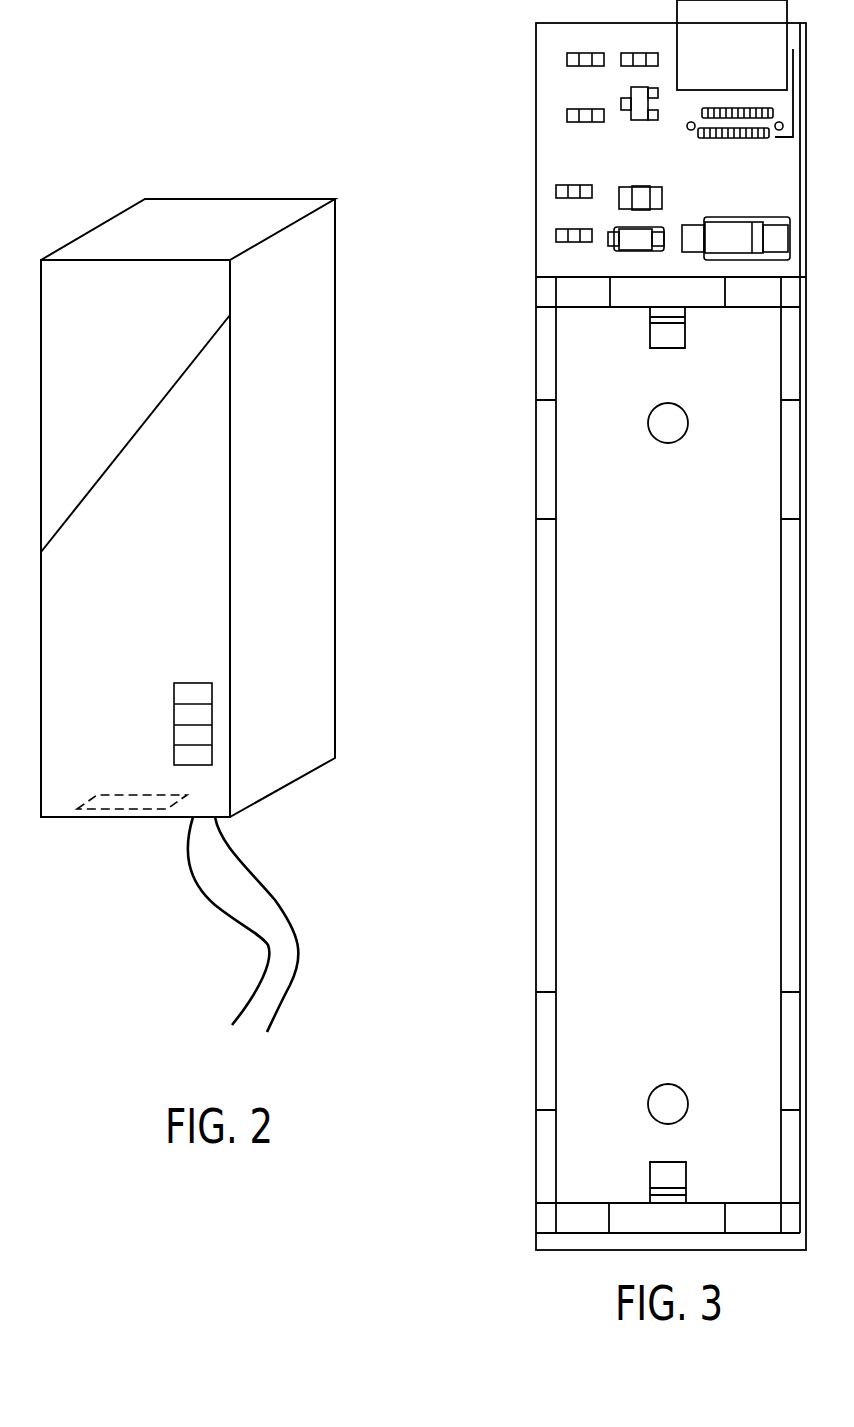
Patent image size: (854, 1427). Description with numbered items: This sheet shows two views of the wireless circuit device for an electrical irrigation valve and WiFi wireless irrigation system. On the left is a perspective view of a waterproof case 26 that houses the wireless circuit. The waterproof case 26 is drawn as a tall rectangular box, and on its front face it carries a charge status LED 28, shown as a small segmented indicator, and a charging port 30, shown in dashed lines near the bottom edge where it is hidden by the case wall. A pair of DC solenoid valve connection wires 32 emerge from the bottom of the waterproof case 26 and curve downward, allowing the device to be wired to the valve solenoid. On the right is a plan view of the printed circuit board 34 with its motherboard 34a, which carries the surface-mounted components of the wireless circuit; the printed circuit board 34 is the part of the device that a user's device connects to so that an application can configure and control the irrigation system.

In FIG. 2, the waterproof case 26 is at (90, 224).
In FIG. 2, the charge status LED 28 is at (174, 717).
In FIG. 2, the charging port 30 is at (111, 817).
In FIG. 2, the DC solenoid valve connection wires 32 is at (287, 1000).
In FIG. 3, the printed circuit board 34 is at (485, 148).
In FIG. 3, the motherboard 34a is at (535, 238).